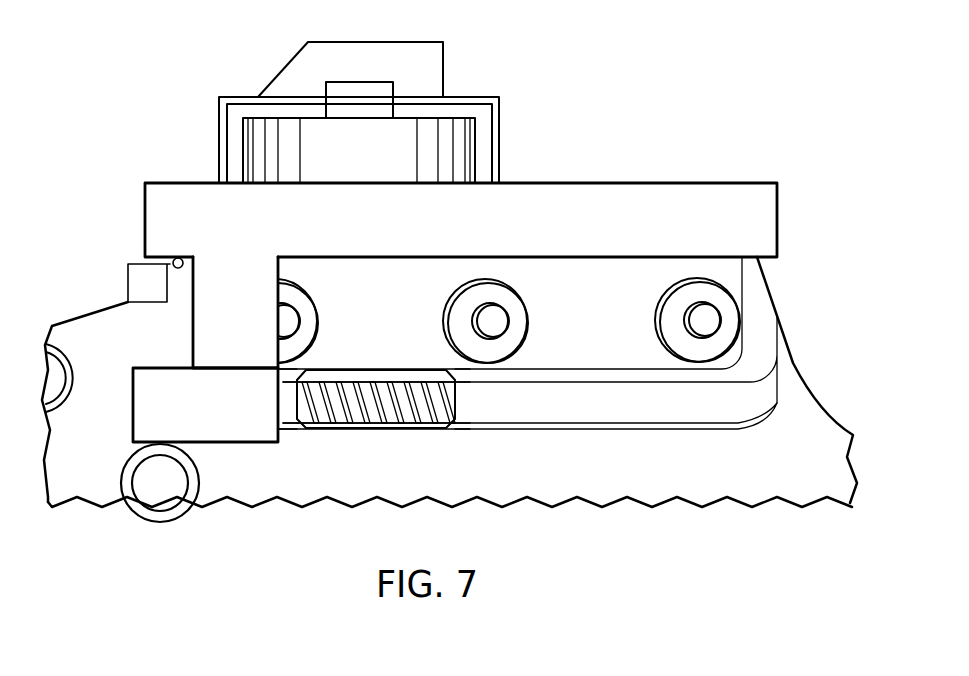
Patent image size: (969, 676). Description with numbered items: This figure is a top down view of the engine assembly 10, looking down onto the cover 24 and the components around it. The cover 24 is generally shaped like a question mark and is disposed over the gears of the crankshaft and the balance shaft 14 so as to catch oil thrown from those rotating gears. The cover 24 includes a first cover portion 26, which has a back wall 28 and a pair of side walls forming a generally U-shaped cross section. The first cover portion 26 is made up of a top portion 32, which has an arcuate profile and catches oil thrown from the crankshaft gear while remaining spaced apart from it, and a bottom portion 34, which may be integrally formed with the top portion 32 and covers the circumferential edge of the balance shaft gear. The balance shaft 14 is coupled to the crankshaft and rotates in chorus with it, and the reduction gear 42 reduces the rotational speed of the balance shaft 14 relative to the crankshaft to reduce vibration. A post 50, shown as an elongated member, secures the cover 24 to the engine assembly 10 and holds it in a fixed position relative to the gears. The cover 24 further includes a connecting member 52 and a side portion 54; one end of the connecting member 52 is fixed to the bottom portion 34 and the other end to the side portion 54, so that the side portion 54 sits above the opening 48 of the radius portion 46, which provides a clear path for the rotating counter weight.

The engine assembly 10 is at (449, 256).
The balance shaft 14 is at (445, 127).
The cover 24 is at (495, 208).
The first cover portion 26 is at (547, 258).
The back wall 28 is at (578, 231).
The top portion 32 is at (400, 135).
The bottom portion 34 is at (296, 112).
The reduction gear 42 is at (377, 422).
The radius portion 46 is at (356, 358).
The opening 48 is at (420, 430).
The post 50 is at (172, 263).
The connecting member 52 is at (183, 312).
The side portion 54 is at (199, 454).